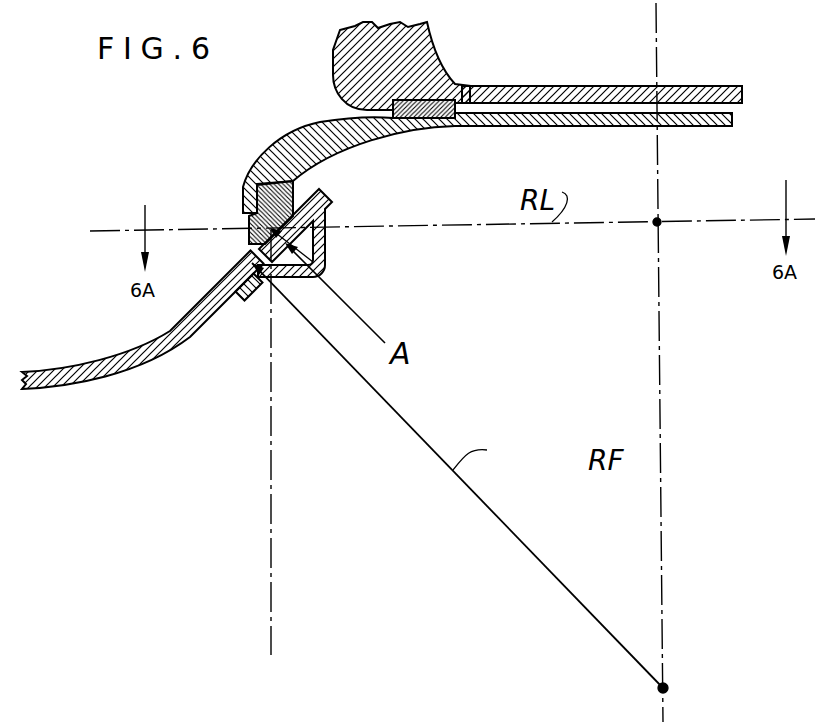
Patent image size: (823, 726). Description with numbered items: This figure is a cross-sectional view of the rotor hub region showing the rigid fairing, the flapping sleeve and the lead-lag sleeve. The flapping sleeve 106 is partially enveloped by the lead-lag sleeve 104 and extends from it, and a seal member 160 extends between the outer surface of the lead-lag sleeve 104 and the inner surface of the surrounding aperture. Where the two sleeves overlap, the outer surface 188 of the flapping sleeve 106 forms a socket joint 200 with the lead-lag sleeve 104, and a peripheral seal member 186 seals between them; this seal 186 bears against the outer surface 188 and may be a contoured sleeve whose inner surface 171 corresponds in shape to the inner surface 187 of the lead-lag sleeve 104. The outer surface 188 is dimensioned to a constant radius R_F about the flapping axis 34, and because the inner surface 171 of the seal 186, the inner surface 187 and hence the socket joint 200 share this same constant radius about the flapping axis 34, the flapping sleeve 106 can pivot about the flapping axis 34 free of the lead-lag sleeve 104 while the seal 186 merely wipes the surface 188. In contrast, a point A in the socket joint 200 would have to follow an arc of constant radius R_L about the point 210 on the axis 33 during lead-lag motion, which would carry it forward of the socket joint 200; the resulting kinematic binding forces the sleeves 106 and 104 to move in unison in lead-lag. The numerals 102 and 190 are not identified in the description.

The bead seat body 102 is at (335, 62).
The lead-lag sleeve 104 is at (275, 140).
The flapping sleeve 106 is at (168, 337).
The seal member 160 is at (455, 80).
The inner surface of seal 171 is at (247, 247).
The peripheral seal member 186 is at (295, 183).
The inner surface of lead-lag sleeve 187 is at (243, 218).
The outer surface of flapping sleeve 188 is at (198, 288).
The joint block 190 is at (418, 122).
The socket joint 200 is at (322, 190).
The point on axis 210 is at (655, 226).
The axis 33 is at (664, 500).
The flapping axis 34 is at (672, 688).